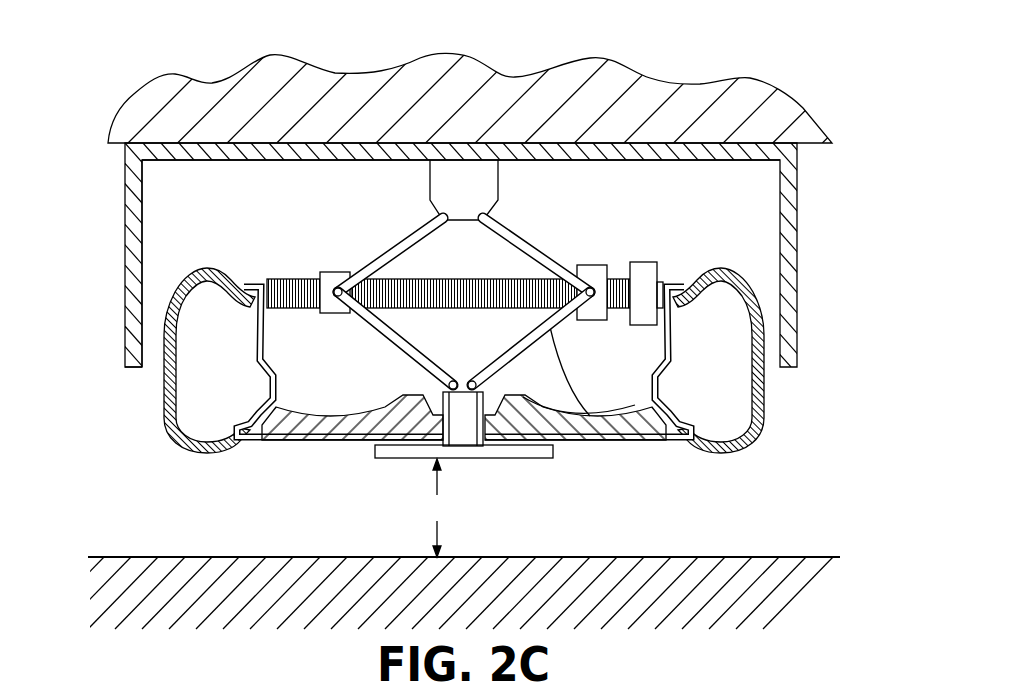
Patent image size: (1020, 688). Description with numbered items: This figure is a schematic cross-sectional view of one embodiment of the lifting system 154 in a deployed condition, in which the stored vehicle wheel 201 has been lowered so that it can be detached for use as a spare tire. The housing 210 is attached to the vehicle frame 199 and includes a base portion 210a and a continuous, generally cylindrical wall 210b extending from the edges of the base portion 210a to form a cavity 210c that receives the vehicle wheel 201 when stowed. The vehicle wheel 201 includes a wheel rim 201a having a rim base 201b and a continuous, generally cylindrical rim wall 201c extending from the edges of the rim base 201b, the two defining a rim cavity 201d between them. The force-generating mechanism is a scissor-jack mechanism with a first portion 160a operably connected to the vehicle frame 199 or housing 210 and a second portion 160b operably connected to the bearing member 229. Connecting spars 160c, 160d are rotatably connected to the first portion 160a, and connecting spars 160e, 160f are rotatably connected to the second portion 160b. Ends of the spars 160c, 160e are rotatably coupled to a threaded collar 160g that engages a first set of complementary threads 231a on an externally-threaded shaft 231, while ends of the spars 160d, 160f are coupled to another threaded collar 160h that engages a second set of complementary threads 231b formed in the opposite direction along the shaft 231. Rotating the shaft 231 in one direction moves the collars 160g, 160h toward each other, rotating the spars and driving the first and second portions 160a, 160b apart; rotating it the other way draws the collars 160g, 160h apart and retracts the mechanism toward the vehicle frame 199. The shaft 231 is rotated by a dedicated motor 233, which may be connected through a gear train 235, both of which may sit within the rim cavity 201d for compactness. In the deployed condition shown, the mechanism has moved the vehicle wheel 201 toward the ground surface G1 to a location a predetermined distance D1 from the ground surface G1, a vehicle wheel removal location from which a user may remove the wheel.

The lifting system 154 is at (478, 73).
The vehicle frame 199 is at (518, 124).
The housing 210 is at (494, 216).
The base portion 210a is at (627, 143).
The cylindrical wall 210b is at (150, 232).
The cavity 210c is at (157, 360).
The first portion 160a is at (452, 178).
The second portion 160b is at (438, 452).
The connecting spar 160c is at (400, 243).
The connecting spar 160d is at (597, 266).
The connecting spar 160e is at (377, 323).
The connecting spar 160f is at (595, 427).
The threaded collar 160g is at (325, 270).
The threaded collar 160h is at (603, 326).
The externally-threaded shaft 231 is at (520, 349).
The first set of complementary threads 231a is at (410, 303).
The second set of complementary threads 231b is at (505, 272).
The motor 233 is at (646, 262).
The gear train 235 is at (660, 285).
The bearing member 229 is at (522, 458).
The vehicle wheel 201 is at (515, 399).
The wheel rim 201a is at (632, 440).
The rim base 201b is at (567, 442).
The rim wall 201c is at (765, 358).
The rim cavity 201d is at (674, 435).
The predetermined distance D1 is at (440, 508).
The ground surface G1 is at (810, 557).